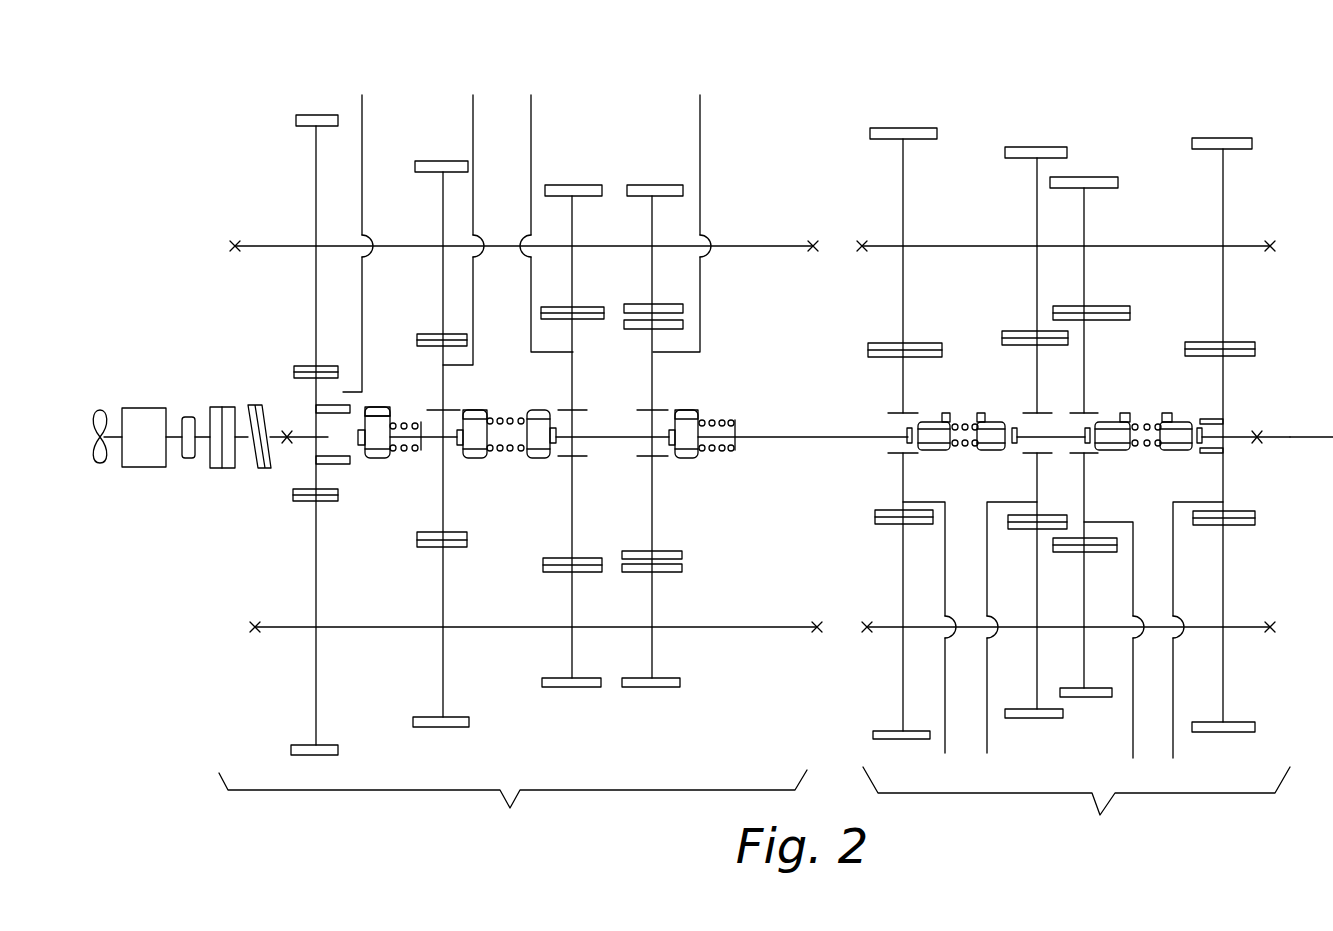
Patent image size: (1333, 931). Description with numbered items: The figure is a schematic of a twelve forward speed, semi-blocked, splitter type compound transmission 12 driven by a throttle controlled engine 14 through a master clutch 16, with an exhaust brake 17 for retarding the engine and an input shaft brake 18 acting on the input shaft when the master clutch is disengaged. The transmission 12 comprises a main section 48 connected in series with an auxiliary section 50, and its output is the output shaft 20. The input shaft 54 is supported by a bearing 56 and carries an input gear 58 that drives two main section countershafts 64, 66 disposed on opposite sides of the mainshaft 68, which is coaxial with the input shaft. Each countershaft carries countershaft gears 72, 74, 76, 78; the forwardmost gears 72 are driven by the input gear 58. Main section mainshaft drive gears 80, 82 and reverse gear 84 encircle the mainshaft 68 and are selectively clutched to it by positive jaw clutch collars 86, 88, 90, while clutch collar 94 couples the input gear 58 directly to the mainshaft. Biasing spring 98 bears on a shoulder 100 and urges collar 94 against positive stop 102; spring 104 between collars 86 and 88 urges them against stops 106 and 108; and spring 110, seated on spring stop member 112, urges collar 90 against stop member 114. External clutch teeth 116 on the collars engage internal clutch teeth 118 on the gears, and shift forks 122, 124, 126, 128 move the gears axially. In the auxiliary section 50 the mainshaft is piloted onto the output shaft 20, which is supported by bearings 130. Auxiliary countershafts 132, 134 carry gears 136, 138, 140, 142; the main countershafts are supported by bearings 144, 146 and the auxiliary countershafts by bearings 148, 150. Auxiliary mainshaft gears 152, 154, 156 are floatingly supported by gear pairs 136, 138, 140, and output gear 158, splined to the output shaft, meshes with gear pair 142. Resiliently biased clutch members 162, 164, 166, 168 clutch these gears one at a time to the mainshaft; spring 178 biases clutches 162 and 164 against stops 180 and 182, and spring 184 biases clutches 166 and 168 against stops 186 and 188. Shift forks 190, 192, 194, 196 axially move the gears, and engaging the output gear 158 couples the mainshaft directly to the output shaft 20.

The compound splitter type change gear transmission 12 is at (794, 160).
The engine 14 is at (142, 479).
The master clutch 16 is at (221, 480).
The exhaust brake 17 is at (184, 470).
The input shaft brake 18 is at (262, 480).
The output shaft 20 is at (1292, 436).
The main section 48 is at (513, 808).
The auxiliary section 50 is at (1076, 808).
The input shaft 54 is at (306, 441).
The bearing 56 is at (288, 425).
The input gear 58 is at (300, 501).
The main section countershaft 64 is at (405, 250).
The main section countershaft 66 is at (340, 626).
The mainshaft 68 is at (805, 440).
The countershaft gear 72 is at (316, 205).
The countershaft gear 74 is at (443, 230).
The countershaft gear 76 is at (572, 218).
The countershaft gear 78 is at (652, 226).
The main section mainshaft drive gear 80 is at (443, 400).
The main section mainshaft drive gear 82 is at (572, 405).
The reverse gear 84 is at (652, 400).
The clutch collar 86 is at (482, 460).
The clutch collar 88 is at (541, 460).
The clutch collar 90 is at (690, 460).
The clutch collar 94 is at (380, 460).
The biasing spring 98 is at (407, 420).
The shoulder 100 is at (422, 452).
The positive stop 102 is at (361, 446).
The biasing spring 104 is at (500, 417).
The positive stop 106 is at (460, 446).
The stop member 108 is at (558, 437).
The biasing spring 110 is at (712, 420).
The spring stop member 112 is at (737, 426).
The positive stop member 114 is at (670, 446).
The external clutch teeth 116 is at (372, 406).
The internal clutch teeth 118 is at (343, 392).
The shift fork 122 is at (700, 325).
The shift fork 124 is at (531, 307).
The shift fork 126 is at (473, 355).
The shift fork 128 is at (362, 318).
The bearings 130 is at (1258, 428).
The auxiliary section countershaft 132 is at (1097, 243).
The auxiliary section countershaft 134 is at (1158, 632).
The auxiliary section countershaft gear 136 is at (903, 226).
The auxiliary section countershaft gear 138 is at (1037, 218).
The auxiliary section countershaft gear 140 is at (1084, 283).
The auxiliary section countershaft gear 142 is at (1223, 218).
The bearing 144 is at (235, 240).
The bearing 146 is at (813, 240).
The bearing 148 is at (862, 240).
The bearing 150 is at (1270, 240).
The auxiliary section mainshaft gear 152 is at (903, 386).
The auxiliary section mainshaft gear 154 is at (1037, 408).
The auxiliary section mainshaft gear 156 is at (1084, 408).
The output gear 158 is at (1223, 386).
The clutch member 162 is at (933, 452).
The clutch member 164 is at (988, 452).
The clutch member 166 is at (1115, 452).
The clutch member 168 is at (1178, 452).
The spring 178 is at (965, 424).
The positive stop 180 is at (906, 432).
The positive stop 182 is at (1014, 445).
The spring 184 is at (1147, 424).
The stop 186 is at (1084, 440).
The stop 188 is at (1199, 426).
The shift fork 190 is at (945, 582).
The shift fork 192 is at (987, 598).
The shift fork 194 is at (1133, 598).
The shift fork 196 is at (1173, 716).